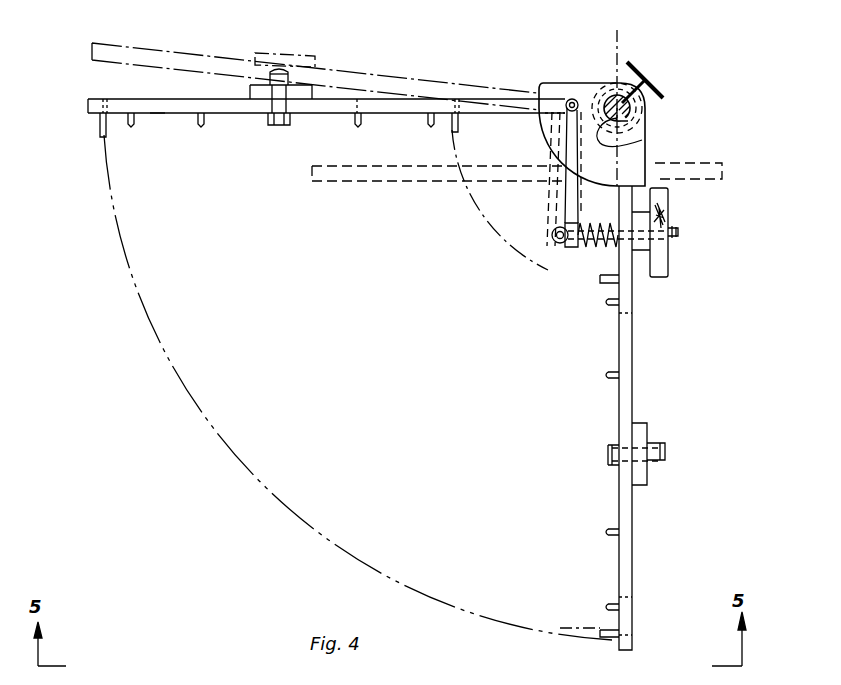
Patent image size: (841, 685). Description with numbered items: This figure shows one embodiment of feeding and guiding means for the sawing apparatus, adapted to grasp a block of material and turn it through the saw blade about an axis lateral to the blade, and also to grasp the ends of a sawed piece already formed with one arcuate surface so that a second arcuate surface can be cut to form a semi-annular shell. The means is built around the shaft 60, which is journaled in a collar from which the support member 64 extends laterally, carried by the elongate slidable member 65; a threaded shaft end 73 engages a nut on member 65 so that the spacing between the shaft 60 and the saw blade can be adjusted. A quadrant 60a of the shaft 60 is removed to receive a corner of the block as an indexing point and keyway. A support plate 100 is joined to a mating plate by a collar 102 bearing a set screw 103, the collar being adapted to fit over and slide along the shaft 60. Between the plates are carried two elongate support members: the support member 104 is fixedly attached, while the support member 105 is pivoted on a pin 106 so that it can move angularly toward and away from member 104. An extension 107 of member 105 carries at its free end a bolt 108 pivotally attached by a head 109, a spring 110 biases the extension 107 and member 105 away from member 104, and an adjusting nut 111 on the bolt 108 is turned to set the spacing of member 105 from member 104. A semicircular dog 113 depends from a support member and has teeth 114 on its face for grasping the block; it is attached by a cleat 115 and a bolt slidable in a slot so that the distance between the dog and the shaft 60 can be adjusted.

The shaft 60 is at (640, 110).
The quadrant 60a is at (642, 141).
The support member 64 is at (592, 92).
The elongate slidable member 65 is at (532, 200).
The threaded end of shaft 73 is at (388, 183).
The support plate 100 is at (602, 97).
The collar 102 is at (623, 38).
The set screw 103 is at (643, 86).
The elongate support member 104 is at (632, 396).
The elongate support member 105 is at (370, 108).
The pin 106 is at (571, 99).
The extension 107 is at (578, 178).
The bolt 108 is at (678, 232).
The head 109 is at (556, 246).
The spring 110 is at (590, 248).
The adjusting nut 111 is at (668, 197).
The semicircular dog 113 is at (157, 115).
The teeth 114 is at (200, 128).
The cleat 115 is at (303, 93).